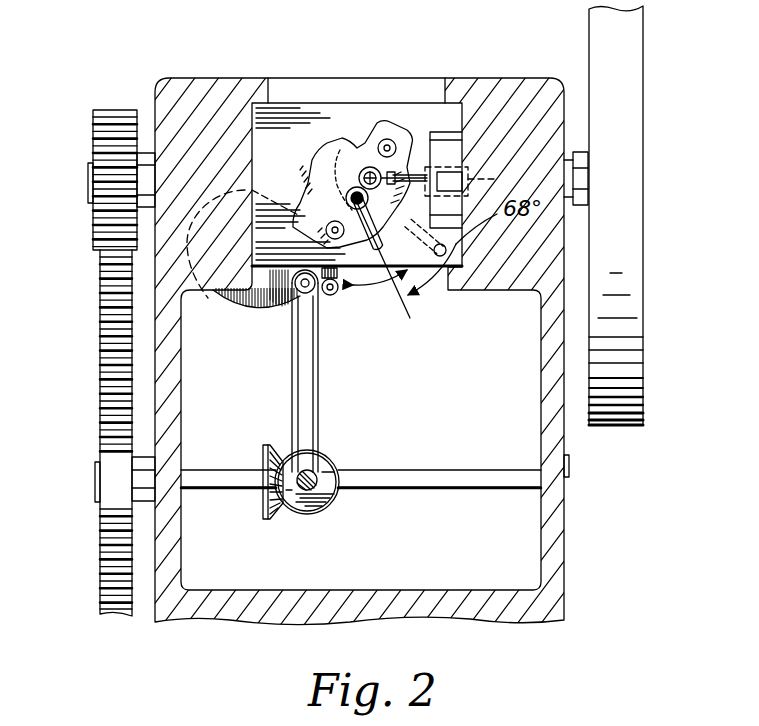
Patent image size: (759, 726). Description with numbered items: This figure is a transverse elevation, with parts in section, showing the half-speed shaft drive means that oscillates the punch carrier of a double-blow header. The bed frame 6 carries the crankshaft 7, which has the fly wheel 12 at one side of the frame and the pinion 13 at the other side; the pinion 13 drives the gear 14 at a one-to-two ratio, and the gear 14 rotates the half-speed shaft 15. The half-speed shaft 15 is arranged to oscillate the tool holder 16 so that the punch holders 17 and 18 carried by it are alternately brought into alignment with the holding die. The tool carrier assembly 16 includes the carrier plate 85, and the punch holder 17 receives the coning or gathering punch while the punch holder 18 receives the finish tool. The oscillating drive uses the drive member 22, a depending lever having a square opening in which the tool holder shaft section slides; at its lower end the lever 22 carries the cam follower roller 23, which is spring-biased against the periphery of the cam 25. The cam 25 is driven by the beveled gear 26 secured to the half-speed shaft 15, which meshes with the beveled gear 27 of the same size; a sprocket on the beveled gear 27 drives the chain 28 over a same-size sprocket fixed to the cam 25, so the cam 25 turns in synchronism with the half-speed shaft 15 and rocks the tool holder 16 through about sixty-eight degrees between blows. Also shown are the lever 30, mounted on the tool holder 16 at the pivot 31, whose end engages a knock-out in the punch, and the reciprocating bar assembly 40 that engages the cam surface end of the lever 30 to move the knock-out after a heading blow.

The bed frame 6 is at (192, 117).
The crankshaft 7 is at (565, 158).
The fly wheel 12 is at (620, 263).
The pinion 13 is at (104, 138).
The gear 14 is at (122, 415).
The half-speed shaft 15 is at (390, 480).
The tool holder 16 is at (349, 138).
The punch holder 17 is at (396, 252).
The punch holder 18 is at (365, 133).
The drive member 22 is at (339, 270).
The cam follower roller 23 is at (310, 296).
The cam 25 is at (253, 305).
The beveled gear 26 is at (260, 455).
The beveled gear 27 is at (322, 465).
The chain 28 is at (316, 420).
The lever 30 is at (409, 165).
The pivot 31 is at (412, 132).
The reciprocating bar assembly 40 is at (431, 170).
The carrier plate 85 is at (306, 210).